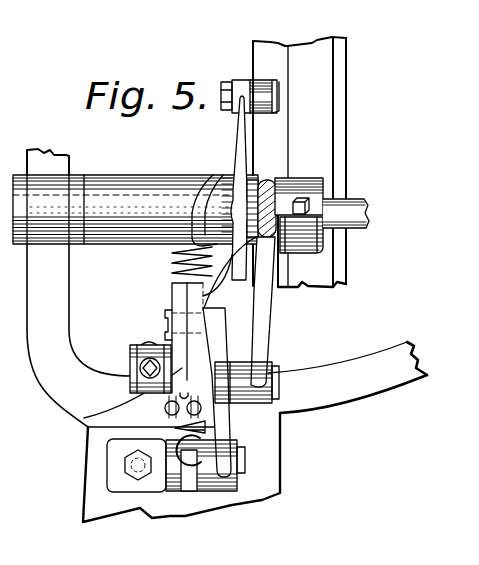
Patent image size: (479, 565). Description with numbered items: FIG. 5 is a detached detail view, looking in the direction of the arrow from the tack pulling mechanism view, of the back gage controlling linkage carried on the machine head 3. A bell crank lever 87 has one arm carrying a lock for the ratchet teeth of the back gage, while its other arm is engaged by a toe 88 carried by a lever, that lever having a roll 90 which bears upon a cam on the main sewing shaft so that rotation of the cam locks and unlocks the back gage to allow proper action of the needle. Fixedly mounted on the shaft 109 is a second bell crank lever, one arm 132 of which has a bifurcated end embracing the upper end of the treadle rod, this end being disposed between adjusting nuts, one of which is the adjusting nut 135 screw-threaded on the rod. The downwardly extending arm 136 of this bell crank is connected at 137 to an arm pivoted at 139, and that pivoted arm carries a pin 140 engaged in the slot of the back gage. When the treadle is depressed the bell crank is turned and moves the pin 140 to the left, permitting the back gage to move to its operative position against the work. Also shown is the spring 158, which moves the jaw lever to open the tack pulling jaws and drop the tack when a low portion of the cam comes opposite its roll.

The head 3 is at (391, 386).
The bell crank lever 87 is at (86, 419).
The toe 88 is at (176, 288).
The roll 90 is at (266, 84).
The shaft 109 is at (350, 203).
The arm of bell crank lever 132 is at (268, 178).
The adjusting nut 135 is at (225, 417).
The downwardly extending arm 136 is at (262, 311).
The connection 137 is at (250, 385).
The pivot 139 is at (244, 470).
The pin 140 is at (167, 325).
The spring 158 is at (176, 264).